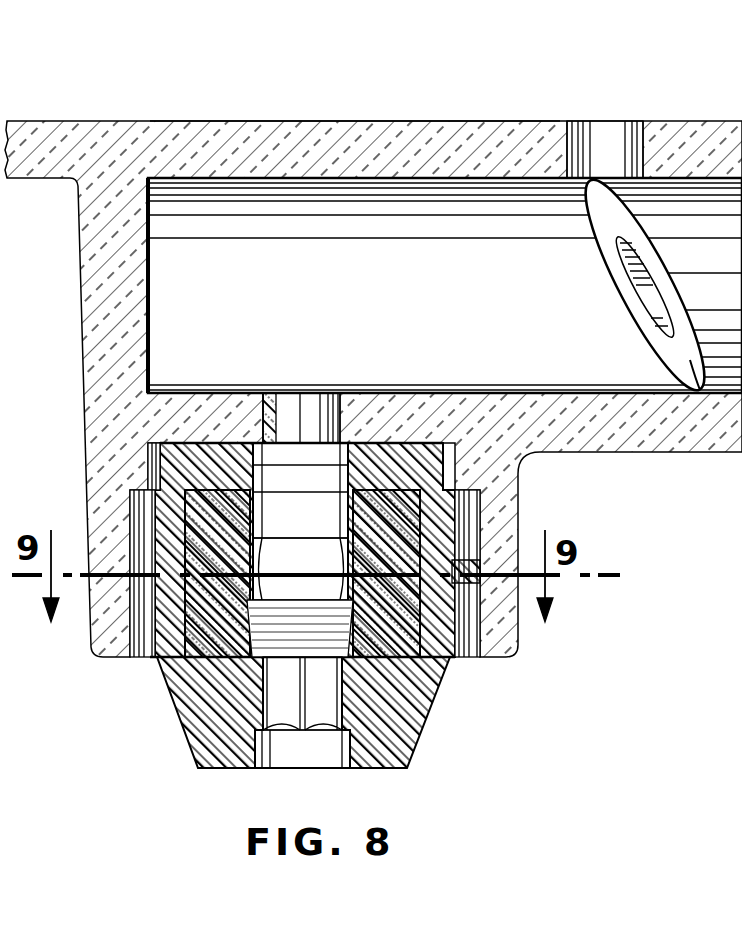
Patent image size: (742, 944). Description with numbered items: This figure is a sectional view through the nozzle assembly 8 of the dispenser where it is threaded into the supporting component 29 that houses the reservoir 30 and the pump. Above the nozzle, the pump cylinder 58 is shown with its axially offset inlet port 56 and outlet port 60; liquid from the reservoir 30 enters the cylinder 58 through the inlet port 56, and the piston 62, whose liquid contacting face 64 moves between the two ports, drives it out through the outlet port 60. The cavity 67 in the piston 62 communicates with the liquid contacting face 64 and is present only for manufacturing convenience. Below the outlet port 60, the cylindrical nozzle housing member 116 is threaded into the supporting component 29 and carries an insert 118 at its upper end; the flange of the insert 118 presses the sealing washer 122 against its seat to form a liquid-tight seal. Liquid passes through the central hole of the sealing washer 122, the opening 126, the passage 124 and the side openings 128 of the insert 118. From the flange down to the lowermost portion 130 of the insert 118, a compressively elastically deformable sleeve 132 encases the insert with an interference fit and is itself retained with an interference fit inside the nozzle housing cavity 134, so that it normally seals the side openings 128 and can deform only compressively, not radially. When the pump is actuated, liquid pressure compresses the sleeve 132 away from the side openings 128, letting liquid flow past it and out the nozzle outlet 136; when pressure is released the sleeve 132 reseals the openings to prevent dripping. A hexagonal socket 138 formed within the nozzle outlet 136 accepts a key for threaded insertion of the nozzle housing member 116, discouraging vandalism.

The nozzle assembly 8 is at (100, 652).
The supporting component 29 is at (155, 128).
The reservoir 30 is at (300, 128).
The inlet port 56 is at (601, 132).
The cylinder 58 is at (300, 326).
The outlet port 60 is at (319, 412).
The piston 62 is at (686, 193).
The liquid contacting face 64 is at (688, 360).
The cavity 67 is at (635, 262).
The nozzle housing member 116 is at (193, 725).
The insert 118 is at (316, 521).
The sealing washer 122 is at (236, 445).
The passage 124 is at (270, 528).
The opening 126 is at (291, 430).
The side opening 128 is at (348, 590).
The lowermost portion 130 is at (400, 660).
The compressively elastically deformable sleeve 132 is at (187, 645).
The nozzle housing cavity 134 is at (418, 650).
The nozzle outlet 136 is at (327, 752).
The hexagonal socket 138 is at (296, 715).